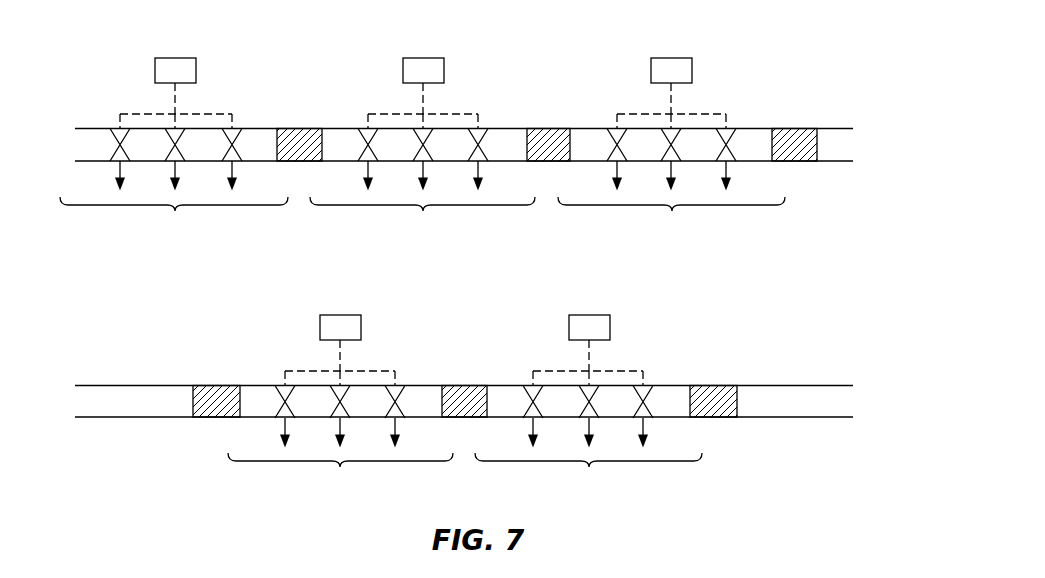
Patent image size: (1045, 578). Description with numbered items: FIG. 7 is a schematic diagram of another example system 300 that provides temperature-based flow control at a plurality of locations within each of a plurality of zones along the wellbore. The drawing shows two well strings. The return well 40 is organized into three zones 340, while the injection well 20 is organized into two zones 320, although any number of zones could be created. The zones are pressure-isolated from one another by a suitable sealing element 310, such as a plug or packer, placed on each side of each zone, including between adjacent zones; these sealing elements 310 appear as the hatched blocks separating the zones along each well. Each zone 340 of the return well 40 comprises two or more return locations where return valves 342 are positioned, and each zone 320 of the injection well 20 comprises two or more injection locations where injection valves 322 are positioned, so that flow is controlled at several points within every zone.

The system 300 is at (795, 42).
The return well 40 is at (325, 107).
The injection well 20 is at (242, 362).
The sealing element 310 is at (300, 128).
The zones of the return well 340 is at (422, 220).
The return valve 342 is at (118, 130).
The zones of the injection well 320 is at (465, 476).
The injection valve 322 is at (280, 393).